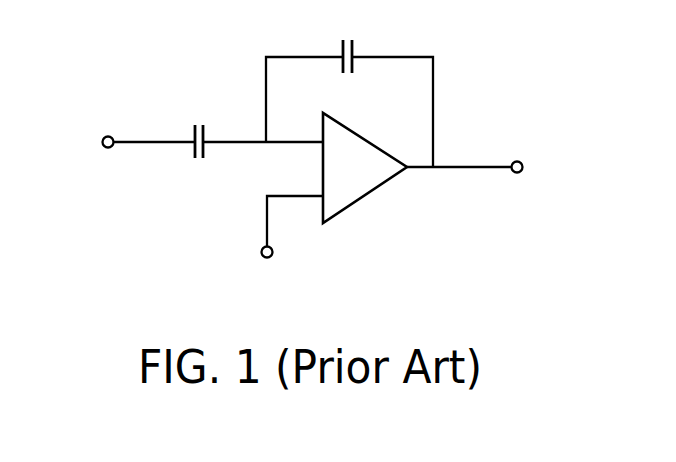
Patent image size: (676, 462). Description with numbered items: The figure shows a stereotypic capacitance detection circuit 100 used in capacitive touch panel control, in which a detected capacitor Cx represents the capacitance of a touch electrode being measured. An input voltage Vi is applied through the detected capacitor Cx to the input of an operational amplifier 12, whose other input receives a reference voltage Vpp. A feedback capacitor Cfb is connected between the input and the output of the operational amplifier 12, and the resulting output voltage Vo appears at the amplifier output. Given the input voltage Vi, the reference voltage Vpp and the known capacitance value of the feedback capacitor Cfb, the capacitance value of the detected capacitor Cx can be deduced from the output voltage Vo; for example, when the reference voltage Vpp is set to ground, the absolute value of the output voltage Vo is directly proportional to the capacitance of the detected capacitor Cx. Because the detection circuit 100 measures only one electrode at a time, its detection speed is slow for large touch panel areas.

The detection circuit 100 is at (90, 22).
The operational amplifier 12 is at (363, 195).
The detected capacitor Cx is at (195, 123).
The feedback capacitor Cfb is at (349, 38).
The input voltage Vi is at (127, 141).
The output voltage Vo is at (482, 166).
The reference voltage Vpp is at (285, 244).